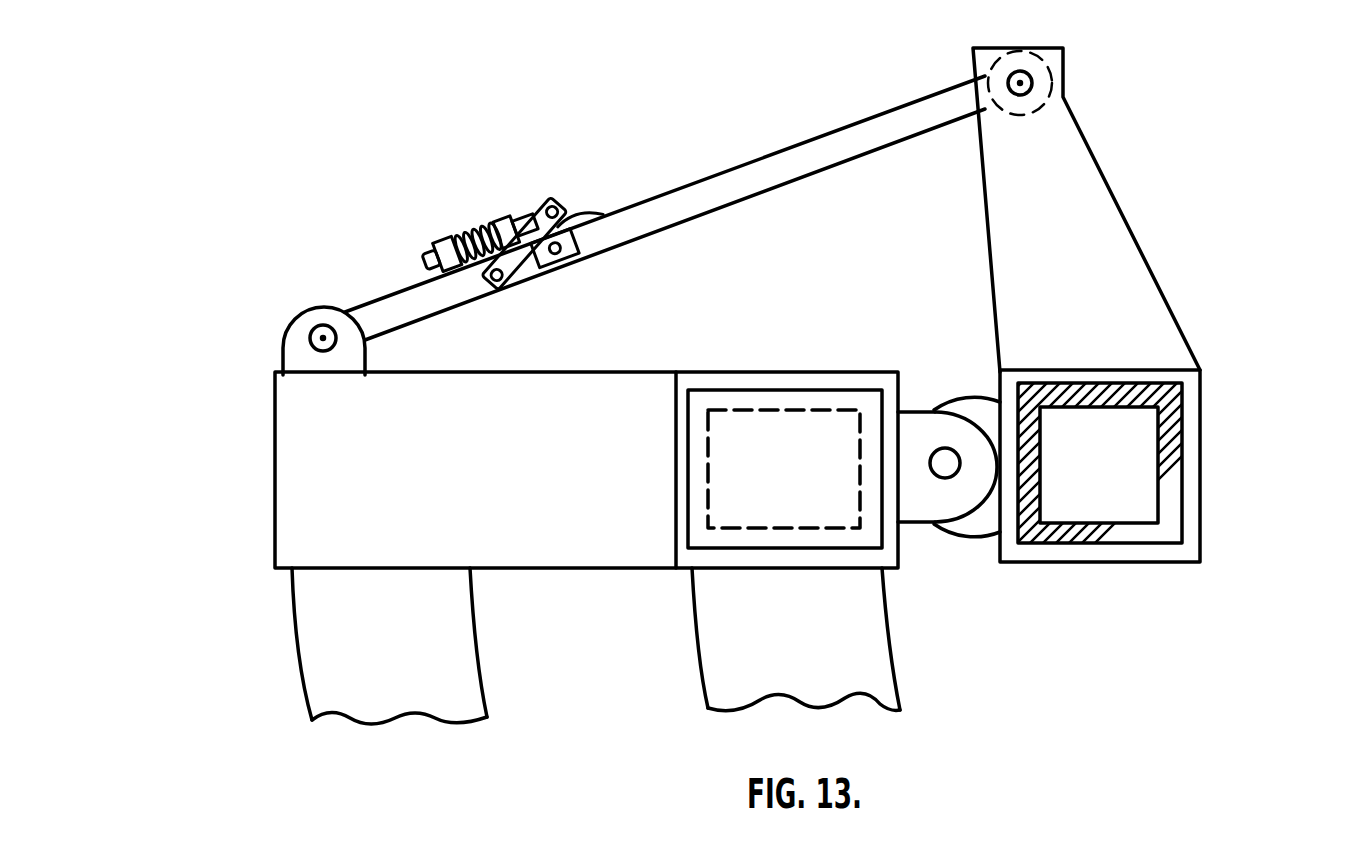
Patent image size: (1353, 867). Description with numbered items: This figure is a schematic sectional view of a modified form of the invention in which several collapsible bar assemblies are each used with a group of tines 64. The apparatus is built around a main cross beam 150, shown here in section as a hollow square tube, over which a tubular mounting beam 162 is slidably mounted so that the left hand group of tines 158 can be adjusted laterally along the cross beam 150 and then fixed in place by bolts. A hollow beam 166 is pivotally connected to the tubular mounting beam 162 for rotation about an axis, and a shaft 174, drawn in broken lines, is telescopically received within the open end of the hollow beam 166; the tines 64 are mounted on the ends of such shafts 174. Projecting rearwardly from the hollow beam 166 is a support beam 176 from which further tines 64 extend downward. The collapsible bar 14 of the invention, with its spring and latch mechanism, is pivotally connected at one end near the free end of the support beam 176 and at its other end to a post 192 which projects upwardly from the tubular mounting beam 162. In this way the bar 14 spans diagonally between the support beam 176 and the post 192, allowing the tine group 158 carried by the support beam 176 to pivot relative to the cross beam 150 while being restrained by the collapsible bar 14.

The collapsible bar assembly 14 is at (607, 148).
The tines 64 is at (725, 637).
The main cross beam 150 is at (1165, 458).
The left hand group of tines 158 is at (391, 180).
The tubular mounting beam 162 is at (1187, 407).
The hollow beam 166 is at (700, 380).
The shaft 174 is at (850, 400).
The support beam 176 is at (310, 459).
The post 192 is at (1095, 295).